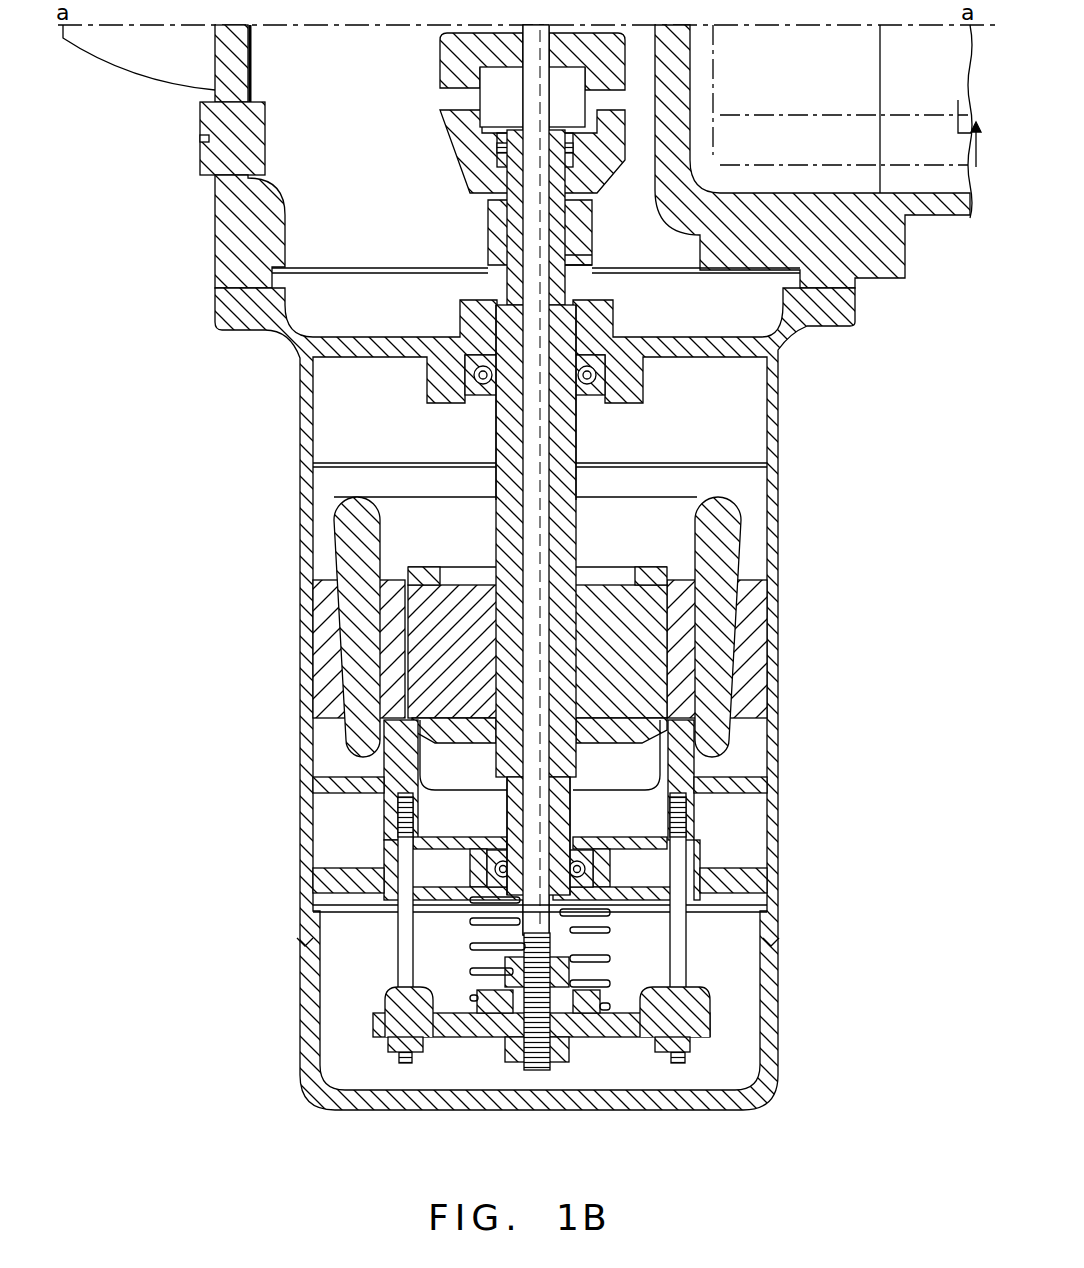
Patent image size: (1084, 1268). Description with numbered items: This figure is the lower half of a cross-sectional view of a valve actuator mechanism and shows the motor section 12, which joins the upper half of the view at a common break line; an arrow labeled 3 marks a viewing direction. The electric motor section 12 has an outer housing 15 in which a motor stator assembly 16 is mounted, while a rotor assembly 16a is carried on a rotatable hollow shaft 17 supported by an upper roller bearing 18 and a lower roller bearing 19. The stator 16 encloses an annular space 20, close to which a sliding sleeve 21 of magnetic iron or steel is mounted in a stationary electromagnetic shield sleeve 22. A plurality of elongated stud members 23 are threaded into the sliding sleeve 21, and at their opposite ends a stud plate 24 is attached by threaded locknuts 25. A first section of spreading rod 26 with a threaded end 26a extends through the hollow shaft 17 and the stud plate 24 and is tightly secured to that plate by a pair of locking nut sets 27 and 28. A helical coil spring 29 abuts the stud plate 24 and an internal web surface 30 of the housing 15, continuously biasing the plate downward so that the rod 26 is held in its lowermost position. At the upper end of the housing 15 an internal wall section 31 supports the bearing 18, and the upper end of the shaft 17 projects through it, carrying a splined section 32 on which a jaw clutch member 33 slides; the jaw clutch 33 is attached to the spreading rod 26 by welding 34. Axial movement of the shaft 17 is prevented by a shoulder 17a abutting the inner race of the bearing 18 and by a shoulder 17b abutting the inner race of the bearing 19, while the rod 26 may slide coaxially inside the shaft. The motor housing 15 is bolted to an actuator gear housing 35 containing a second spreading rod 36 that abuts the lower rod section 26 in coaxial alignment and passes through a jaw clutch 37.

The section view direction arrow 3 is at (969, 130).
The motor section 12 is at (273, 490).
The outer housing 15 is at (773, 568).
The motor stator assembly 16 is at (713, 675).
The rotor assembly 16a is at (643, 572).
The rotatable shaft 17 is at (568, 431).
The shoulder 17a is at (497, 402).
The shoulder 17b is at (570, 834).
The upper roller bearing 18 is at (470, 381).
The lower roller bearing 19 is at (594, 858).
The annular space 20 is at (706, 727).
The sliding sleeve 21 is at (682, 770).
The stationary electromagnetic shield sleeve 22 is at (738, 868).
The elongated stud members 23 is at (397, 843).
The stud plate 24 is at (623, 1023).
The threaded locknuts 25 is at (392, 1050).
The spreading rod 26 is at (537, 777).
The threaded end 26a is at (543, 1067).
The locking nut set 27 is at (570, 977).
The locking nut set 28 is at (570, 1062).
The helical coil spring 29 is at (467, 957).
The internal web surface 30 is at (358, 905).
The internal wall section 31 is at (670, 332).
The splined section 32 is at (582, 263).
The jaw clutch member 33 is at (447, 163).
The welding 34 is at (560, 132).
The actuator gear housing 35 is at (227, 200).
The second spreading rod 36 is at (516, 36).
The jaw clutch 37 is at (576, 28).